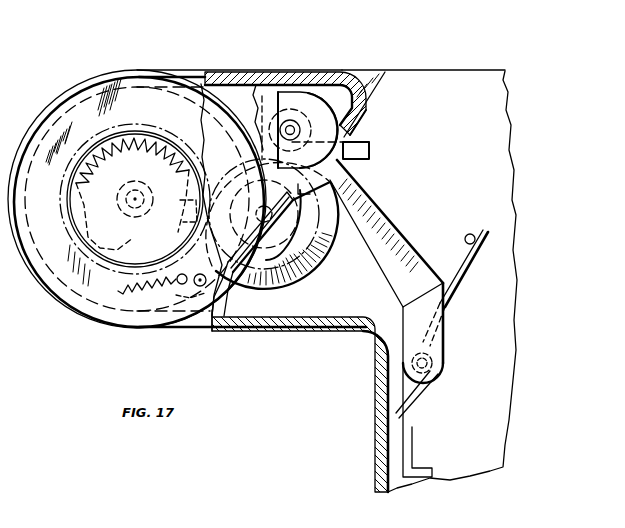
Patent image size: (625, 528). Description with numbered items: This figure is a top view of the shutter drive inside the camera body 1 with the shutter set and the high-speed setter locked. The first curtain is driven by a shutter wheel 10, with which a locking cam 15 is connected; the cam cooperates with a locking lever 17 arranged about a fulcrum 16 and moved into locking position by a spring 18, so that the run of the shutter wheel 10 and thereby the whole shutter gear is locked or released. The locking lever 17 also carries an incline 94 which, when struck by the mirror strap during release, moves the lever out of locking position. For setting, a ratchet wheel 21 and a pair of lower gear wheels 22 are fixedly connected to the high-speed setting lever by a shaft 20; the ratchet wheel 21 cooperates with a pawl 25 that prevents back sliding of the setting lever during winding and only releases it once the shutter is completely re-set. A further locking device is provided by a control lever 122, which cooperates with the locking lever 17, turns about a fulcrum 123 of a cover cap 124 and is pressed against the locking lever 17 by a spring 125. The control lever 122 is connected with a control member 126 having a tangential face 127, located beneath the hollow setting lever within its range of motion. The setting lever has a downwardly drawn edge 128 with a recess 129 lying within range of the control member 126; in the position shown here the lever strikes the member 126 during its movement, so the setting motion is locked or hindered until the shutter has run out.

The camera body 1 is at (68, 275).
The lower gear wheels 22 is at (97, 260).
The ratchet wheel 21 is at (130, 237).
The shaft 20 is at (148, 207).
The pawl 25 is at (192, 290).
The shutter wheel 10 is at (246, 283).
The locking cam 15 is at (268, 240).
The recess 129 is at (326, 190).
The locking lever 17 is at (373, 243).
The spring 18 is at (441, 285).
The fulcrum 16 is at (415, 367).
The incline 94 is at (404, 468).
The tangential face 127 is at (280, 120).
The fulcrum 123 is at (291, 122).
The spring 125 is at (294, 127).
The control member 126 is at (310, 118).
The downwardly drawn edge 128 is at (356, 88).
The cover cap 124 is at (377, 82).
The control lever 122 is at (369, 142).